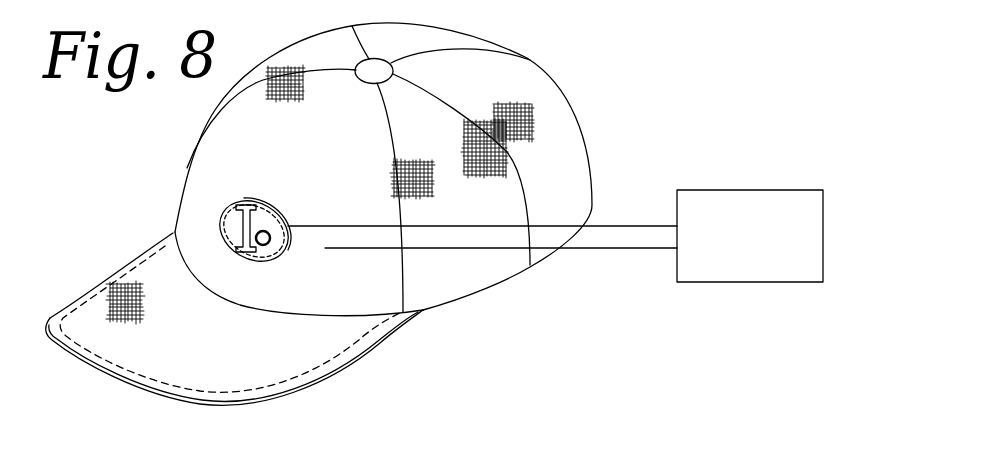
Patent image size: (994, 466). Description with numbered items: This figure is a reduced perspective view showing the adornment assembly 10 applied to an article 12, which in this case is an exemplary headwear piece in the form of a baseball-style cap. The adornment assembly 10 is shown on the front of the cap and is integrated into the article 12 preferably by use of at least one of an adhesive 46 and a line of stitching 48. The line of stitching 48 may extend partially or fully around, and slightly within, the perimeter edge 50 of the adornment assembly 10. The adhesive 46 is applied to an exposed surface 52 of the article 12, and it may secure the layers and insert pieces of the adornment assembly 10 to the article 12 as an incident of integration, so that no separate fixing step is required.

The adornment assembly 10 is at (323, 214).
The article 12 is at (531, 58).
The adhesive 46 is at (755, 269).
The line of stitching 48 is at (260, 198).
The perimeter edge 50 is at (288, 251).
The exposed surface 52 is at (202, 230).